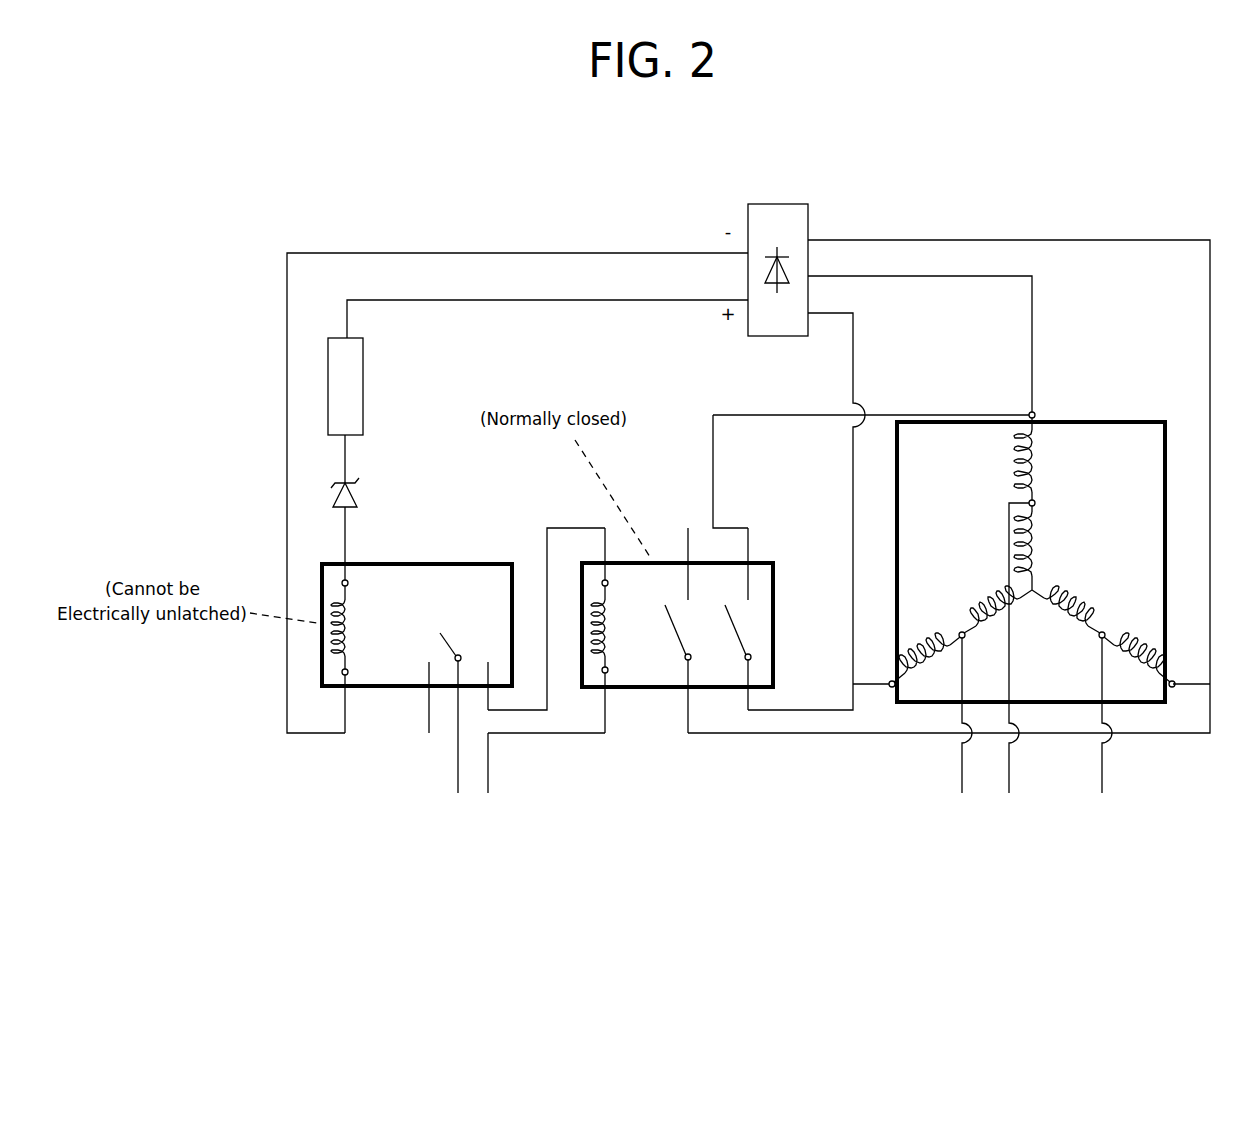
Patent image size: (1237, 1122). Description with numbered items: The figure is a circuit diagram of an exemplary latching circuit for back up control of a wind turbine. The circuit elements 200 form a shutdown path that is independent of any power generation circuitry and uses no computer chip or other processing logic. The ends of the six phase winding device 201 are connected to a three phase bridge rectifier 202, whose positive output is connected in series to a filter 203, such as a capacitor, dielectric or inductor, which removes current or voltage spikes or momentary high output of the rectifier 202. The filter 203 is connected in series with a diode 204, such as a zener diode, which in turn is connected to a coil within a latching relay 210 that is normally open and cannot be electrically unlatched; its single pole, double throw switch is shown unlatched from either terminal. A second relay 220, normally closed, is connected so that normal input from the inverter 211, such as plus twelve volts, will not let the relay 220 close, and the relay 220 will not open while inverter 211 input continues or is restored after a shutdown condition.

The circuit elements 200 is at (1082, 190).
The six phase winding device 201 is at (938, 702).
The three phase bridge rectifier 202 is at (795, 204).
The filter 203 is at (363, 388).
The diode 204 is at (362, 491).
The latching relay 210 is at (387, 686).
The inverter 211 is at (457, 850).
The second relay 220 is at (655, 687).